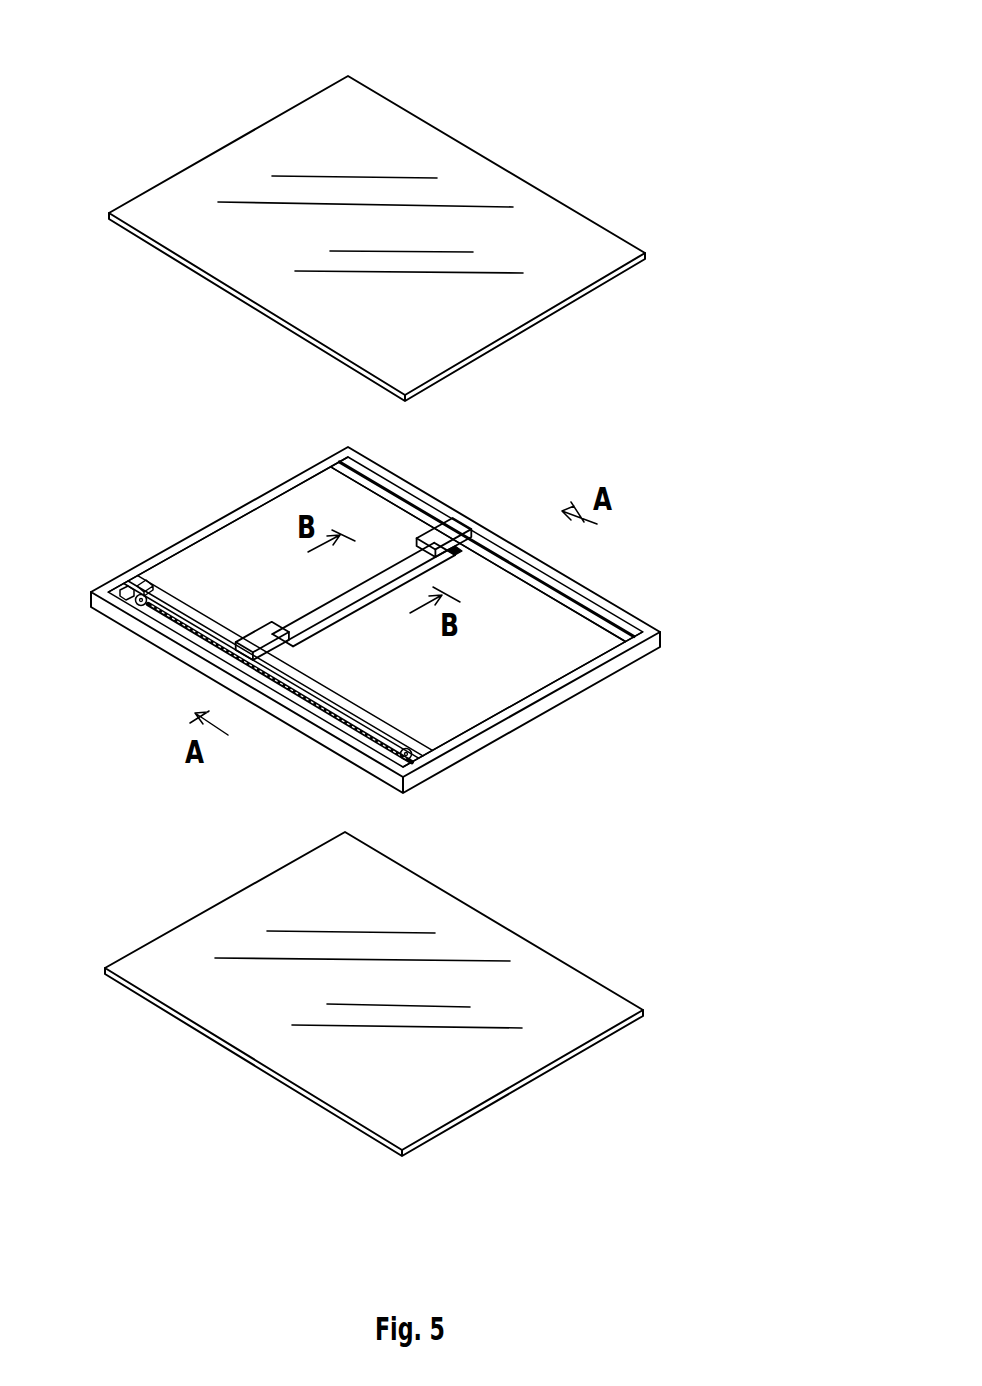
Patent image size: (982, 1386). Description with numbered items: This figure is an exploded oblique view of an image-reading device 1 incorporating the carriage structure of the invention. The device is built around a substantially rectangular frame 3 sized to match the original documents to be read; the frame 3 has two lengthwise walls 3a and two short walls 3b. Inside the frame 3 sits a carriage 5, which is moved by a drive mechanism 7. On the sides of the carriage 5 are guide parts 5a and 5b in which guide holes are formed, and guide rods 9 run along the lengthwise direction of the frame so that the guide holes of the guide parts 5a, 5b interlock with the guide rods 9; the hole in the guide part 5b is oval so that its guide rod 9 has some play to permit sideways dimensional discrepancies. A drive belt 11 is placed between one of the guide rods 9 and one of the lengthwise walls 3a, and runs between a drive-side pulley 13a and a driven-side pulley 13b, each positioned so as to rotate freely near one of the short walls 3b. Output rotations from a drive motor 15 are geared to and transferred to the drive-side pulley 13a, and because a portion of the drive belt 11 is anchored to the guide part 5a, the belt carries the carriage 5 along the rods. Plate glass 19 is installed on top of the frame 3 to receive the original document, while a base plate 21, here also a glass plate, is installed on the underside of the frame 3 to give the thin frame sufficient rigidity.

The image-reading device 1 is at (688, 487).
The frame 3 is at (660, 633).
The lengthwise walls 3a is at (495, 537).
The short walls 3b is at (235, 512).
The carriage 5 is at (385, 547).
The guide part 5a is at (262, 630).
The guide part 5b is at (438, 520).
The drive mechanism 7 is at (134, 612).
The guide rods 9 is at (191, 612).
The drive belt 11 is at (216, 652).
The drive-side pulley 13a is at (146, 592).
The driven-side pulley 13b is at (423, 760).
The drive motor 15 is at (122, 590).
The plate glass 19 is at (447, 147).
The base plate 21 is at (545, 970).